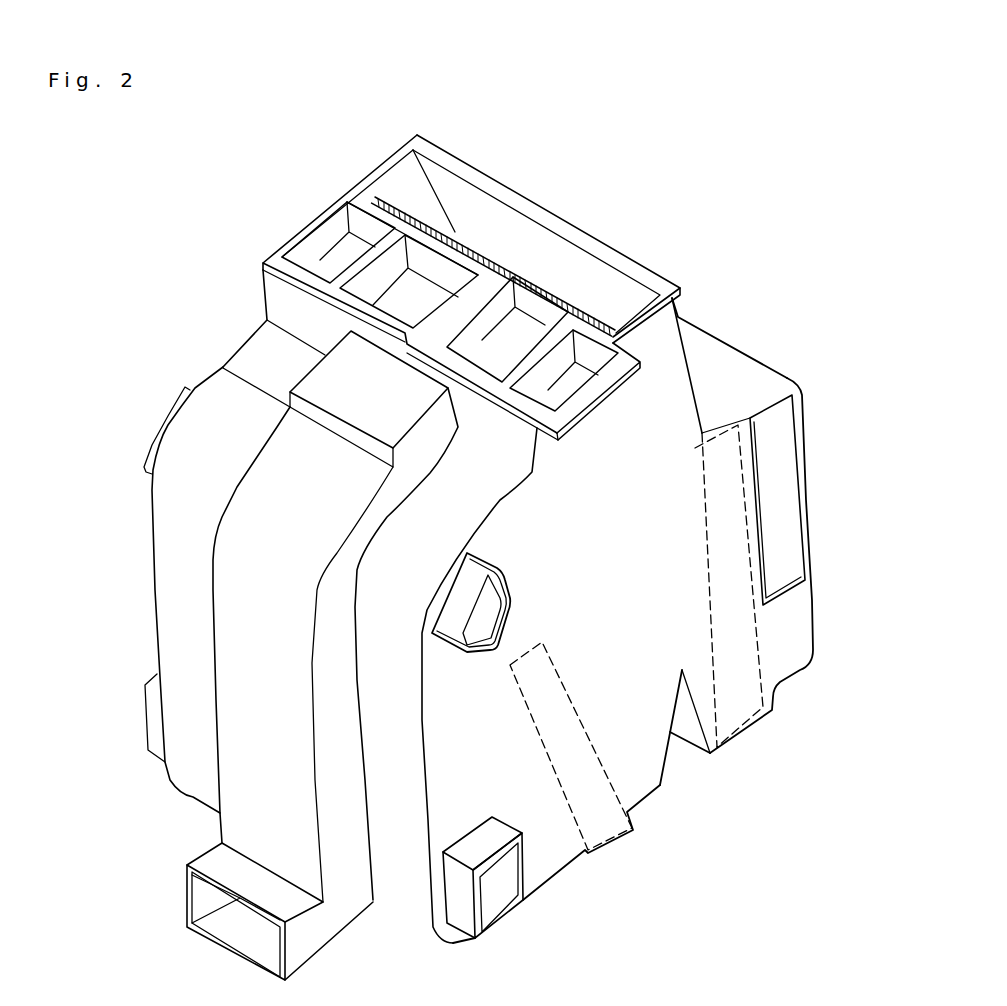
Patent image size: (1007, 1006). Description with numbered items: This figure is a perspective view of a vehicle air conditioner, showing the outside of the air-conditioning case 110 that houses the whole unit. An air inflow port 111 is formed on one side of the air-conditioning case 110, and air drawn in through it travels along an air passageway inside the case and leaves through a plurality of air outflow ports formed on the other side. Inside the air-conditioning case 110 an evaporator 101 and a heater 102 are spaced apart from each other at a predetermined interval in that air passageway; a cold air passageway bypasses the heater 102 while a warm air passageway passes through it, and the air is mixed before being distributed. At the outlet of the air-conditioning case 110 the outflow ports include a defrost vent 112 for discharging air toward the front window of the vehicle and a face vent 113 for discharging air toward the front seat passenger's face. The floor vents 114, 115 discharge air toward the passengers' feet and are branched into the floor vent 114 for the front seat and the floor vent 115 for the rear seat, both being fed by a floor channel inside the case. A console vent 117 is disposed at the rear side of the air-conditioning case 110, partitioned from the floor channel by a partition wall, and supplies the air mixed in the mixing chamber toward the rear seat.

The evaporator 101 is at (755, 642).
The heater 102 is at (588, 750).
The air-conditioning case 110 is at (815, 447).
The air inflow port 111 is at (792, 418).
The defrost vent 112 is at (580, 285).
The face vent 113 is at (500, 348).
The floor vent for the front seat 114 is at (485, 618).
The floor vent for the rear seat 115 is at (498, 895).
The console vent 117 is at (250, 633).